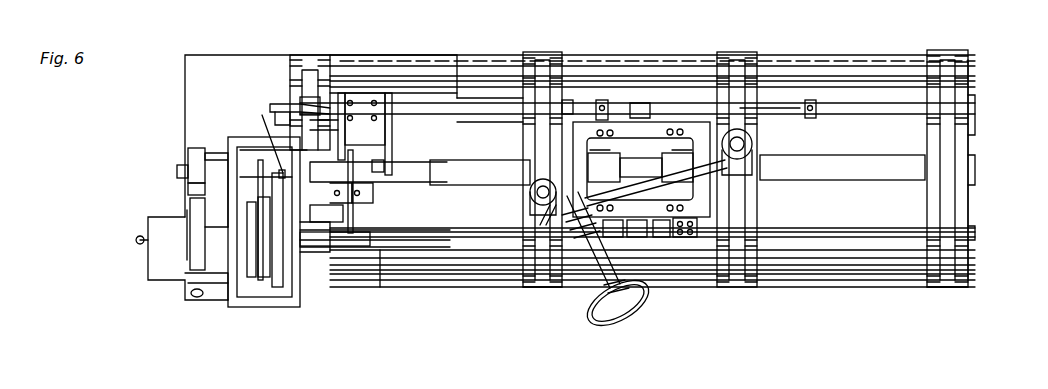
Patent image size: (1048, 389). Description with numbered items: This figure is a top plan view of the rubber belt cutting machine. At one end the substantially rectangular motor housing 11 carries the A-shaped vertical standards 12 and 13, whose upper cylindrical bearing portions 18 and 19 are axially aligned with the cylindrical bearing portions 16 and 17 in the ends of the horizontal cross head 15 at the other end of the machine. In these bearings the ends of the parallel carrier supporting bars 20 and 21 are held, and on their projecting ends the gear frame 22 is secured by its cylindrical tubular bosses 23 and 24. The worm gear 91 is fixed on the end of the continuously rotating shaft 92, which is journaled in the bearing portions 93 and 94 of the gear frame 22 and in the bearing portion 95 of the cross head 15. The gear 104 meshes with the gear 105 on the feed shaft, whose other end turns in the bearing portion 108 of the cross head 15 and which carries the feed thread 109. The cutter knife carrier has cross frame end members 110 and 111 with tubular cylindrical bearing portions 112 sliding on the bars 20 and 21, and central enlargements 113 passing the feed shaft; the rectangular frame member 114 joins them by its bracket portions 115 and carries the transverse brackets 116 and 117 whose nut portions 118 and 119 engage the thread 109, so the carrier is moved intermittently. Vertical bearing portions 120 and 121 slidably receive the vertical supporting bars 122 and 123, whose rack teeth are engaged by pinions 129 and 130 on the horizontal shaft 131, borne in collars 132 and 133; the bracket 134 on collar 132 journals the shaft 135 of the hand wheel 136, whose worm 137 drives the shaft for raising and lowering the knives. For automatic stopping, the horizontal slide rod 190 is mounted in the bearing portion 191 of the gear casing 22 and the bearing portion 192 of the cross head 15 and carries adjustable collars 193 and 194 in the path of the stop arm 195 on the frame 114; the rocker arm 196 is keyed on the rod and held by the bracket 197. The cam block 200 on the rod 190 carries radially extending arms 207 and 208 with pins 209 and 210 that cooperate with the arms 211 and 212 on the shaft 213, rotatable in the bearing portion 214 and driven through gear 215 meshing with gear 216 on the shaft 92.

The motor housing 11 is at (188, 99).
The vertical standard 12 is at (433, 290).
The vertical standard 13 is at (428, 58).
The horizontal cross head 15 is at (966, 204).
The cylindrical bearing portion 16 is at (957, 287).
The cylindrical bearing portion 17 is at (950, 66).
The cylindrical bearing portion 18 is at (355, 275).
The cylindrical bearing portion 19 is at (356, 57).
The carrier supporting bar 20 is at (848, 272).
The carrier supporting bar 21 is at (496, 64).
The gear frame 22 is at (262, 307).
The cylindrical tubular boss 23 is at (323, 295).
The cylindrical tubular boss 24 is at (310, 63).
The worm gear 91 is at (190, 248).
The shaft 92 is at (500, 238).
The bearing portion 93 is at (193, 288).
The bearing portion 94 is at (322, 240).
The bearing portion 95 is at (960, 233).
The gear 104 is at (188, 161).
The gear 105 is at (190, 191).
The bearing portion 108 is at (966, 183).
The feed thread 109 is at (465, 163).
The cross frame end member 110 is at (532, 126).
The cross frame end member 111 is at (752, 136).
The tubular cylindrical bearing portion 112 is at (550, 275).
The enlargement 113 is at (535, 150).
The rectangular frame member 114 is at (661, 125).
The bracket portion 115 is at (564, 100).
The transverse bracket 116 is at (608, 150).
The transverse bracket 117 is at (672, 151).
The nut portion 118 is at (601, 150).
The nut portion 119 is at (683, 146).
The vertical bearing portion 120 is at (530, 200).
The vertical bearing portion 121 is at (755, 145).
The vertical supporting bar 122 is at (530, 212).
The vertical supporting bar 123 is at (742, 147).
The pinion 129 is at (550, 205).
The pinion 130 is at (770, 180).
The horizontal shaft 131 is at (628, 194).
The collar 132 is at (528, 190).
The collar 133 is at (762, 110).
The bracket 134 is at (588, 237).
The shaft 135 is at (626, 284).
The hand wheel 136 is at (628, 316).
The worm 137 is at (596, 250).
The horizontal slide rod 190 is at (501, 108).
The bearing portion 191 is at (300, 103).
The bearing portion 192 is at (968, 103).
The collar 193 is at (604, 99).
The collar 194 is at (812, 100).
The stop arm 195 is at (640, 103).
The rocker arm 196 is at (278, 118).
The bracket 197 is at (306, 111).
The cam block 200 is at (360, 100).
The radially extending arm 207 is at (390, 142).
The radially extending arm 208 is at (338, 128).
The pin 209 is at (382, 165).
The pin 210 is at (348, 155).
The radially extending arm 211 is at (374, 188).
The radially extending arm 212 is at (355, 212).
The shaft 213 is at (373, 200).
The bearing portion 214 is at (328, 213).
The gear 215 is at (280, 150).
The gear 216 is at (278, 290).